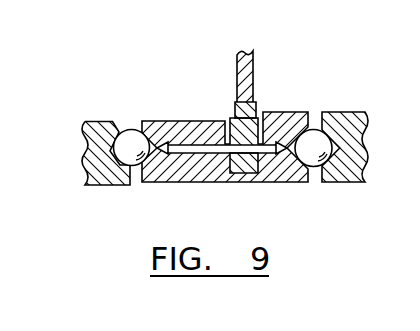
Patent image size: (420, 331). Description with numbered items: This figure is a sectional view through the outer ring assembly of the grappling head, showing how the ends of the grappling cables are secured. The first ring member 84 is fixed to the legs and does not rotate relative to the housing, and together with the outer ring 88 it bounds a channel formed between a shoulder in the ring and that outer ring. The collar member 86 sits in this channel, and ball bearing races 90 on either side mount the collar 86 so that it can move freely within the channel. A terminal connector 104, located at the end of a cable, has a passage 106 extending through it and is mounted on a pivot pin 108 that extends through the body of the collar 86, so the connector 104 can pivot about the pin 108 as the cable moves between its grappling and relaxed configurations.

The first ring member 84 is at (348, 173).
The collar member 86 is at (160, 184).
The outer ring 88 is at (95, 186).
The ball bearing races 90 is at (134, 143).
The terminal connector 104 is at (243, 108).
The passage 106 is at (271, 184).
The pivot pin 108 is at (202, 155).